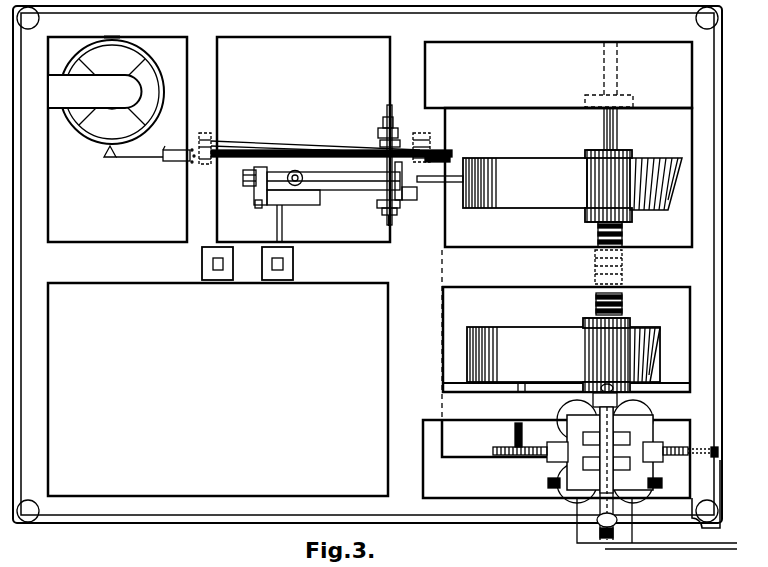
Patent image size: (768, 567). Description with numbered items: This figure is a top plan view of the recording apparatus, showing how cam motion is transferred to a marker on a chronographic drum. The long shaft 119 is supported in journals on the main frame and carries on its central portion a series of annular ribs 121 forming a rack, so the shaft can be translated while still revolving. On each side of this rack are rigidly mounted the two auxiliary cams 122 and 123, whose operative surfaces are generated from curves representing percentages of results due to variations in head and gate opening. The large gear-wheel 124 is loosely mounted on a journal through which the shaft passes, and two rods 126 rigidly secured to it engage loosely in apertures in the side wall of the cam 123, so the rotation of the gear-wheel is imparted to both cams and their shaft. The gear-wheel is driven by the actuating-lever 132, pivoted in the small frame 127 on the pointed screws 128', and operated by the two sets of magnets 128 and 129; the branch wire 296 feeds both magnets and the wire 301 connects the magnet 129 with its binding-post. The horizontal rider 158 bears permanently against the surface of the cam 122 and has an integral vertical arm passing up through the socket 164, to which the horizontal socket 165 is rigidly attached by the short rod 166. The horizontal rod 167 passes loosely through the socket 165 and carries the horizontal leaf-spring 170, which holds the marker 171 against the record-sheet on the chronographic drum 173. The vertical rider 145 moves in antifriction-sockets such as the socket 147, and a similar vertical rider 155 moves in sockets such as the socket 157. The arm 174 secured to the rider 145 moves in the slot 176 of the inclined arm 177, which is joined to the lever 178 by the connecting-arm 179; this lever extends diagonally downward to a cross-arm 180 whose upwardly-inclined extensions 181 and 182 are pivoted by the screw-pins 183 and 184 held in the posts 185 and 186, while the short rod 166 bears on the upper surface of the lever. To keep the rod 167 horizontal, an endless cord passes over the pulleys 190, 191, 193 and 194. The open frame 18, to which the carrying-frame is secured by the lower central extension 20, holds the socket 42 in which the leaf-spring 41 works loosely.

The chronographic drum 173 is at (86, 137).
The marker 171 is at (104, 153).
The horizontal leaf-spring 170 is at (133, 158).
The pulley 193 is at (196, 160).
The pulley 191 is at (200, 138).
The short rod 166 is at (278, 144).
The horizontal socket 165 is at (296, 170).
The socket 164 is at (318, 150).
The horizontal rod 167 is at (243, 161).
The connecting-arm 179 is at (254, 192).
The inclined arm 177 is at (320, 203).
The lever 178 is at (342, 176).
The slot 176 is at (258, 208).
The arm 174 is at (283, 224).
The screw-pin 184 is at (386, 118).
The post 186 is at (380, 130).
The upwardly-inclined extension 182 is at (380, 144).
The upwardly-inclined extension 181 is at (378, 205).
The screw-pin 183 is at (386, 216).
The post 185 is at (392, 222).
The cross-arm 180 is at (405, 195).
The pulley 194 is at (428, 134).
The pulley 190 is at (440, 156).
The horizontal rider 158 is at (448, 182).
The auxiliary cam 122 is at (572, 186).
The long shaft 119 is at (603, 122).
The annular ribs 121 is at (598, 245).
The auxiliary cam 123 is at (563, 355).
The pointed screws 128' is at (610, 464).
The magnets 128 is at (566, 451).
The magnets 129 is at (645, 417).
The small frame 127 is at (605, 443).
The actuating-lever 132 is at (554, 448).
The large gear-wheel 124 is at (493, 451).
The rods 126 is at (514, 433).
The branch wire 296 is at (652, 544).
The wire 301 is at (690, 549).
The vertical rider 155 is at (212, 272).
The antifriction-socket 157 is at (230, 275).
The vertical rider 145 is at (270, 275).
The antifriction-socket 147 is at (290, 280).
The open frame 18 is at (383, 566).
The socket 42 is at (493, 549).
The leaf-spring 41 is at (468, 566).
The lower central extension 20 is at (366, 566).